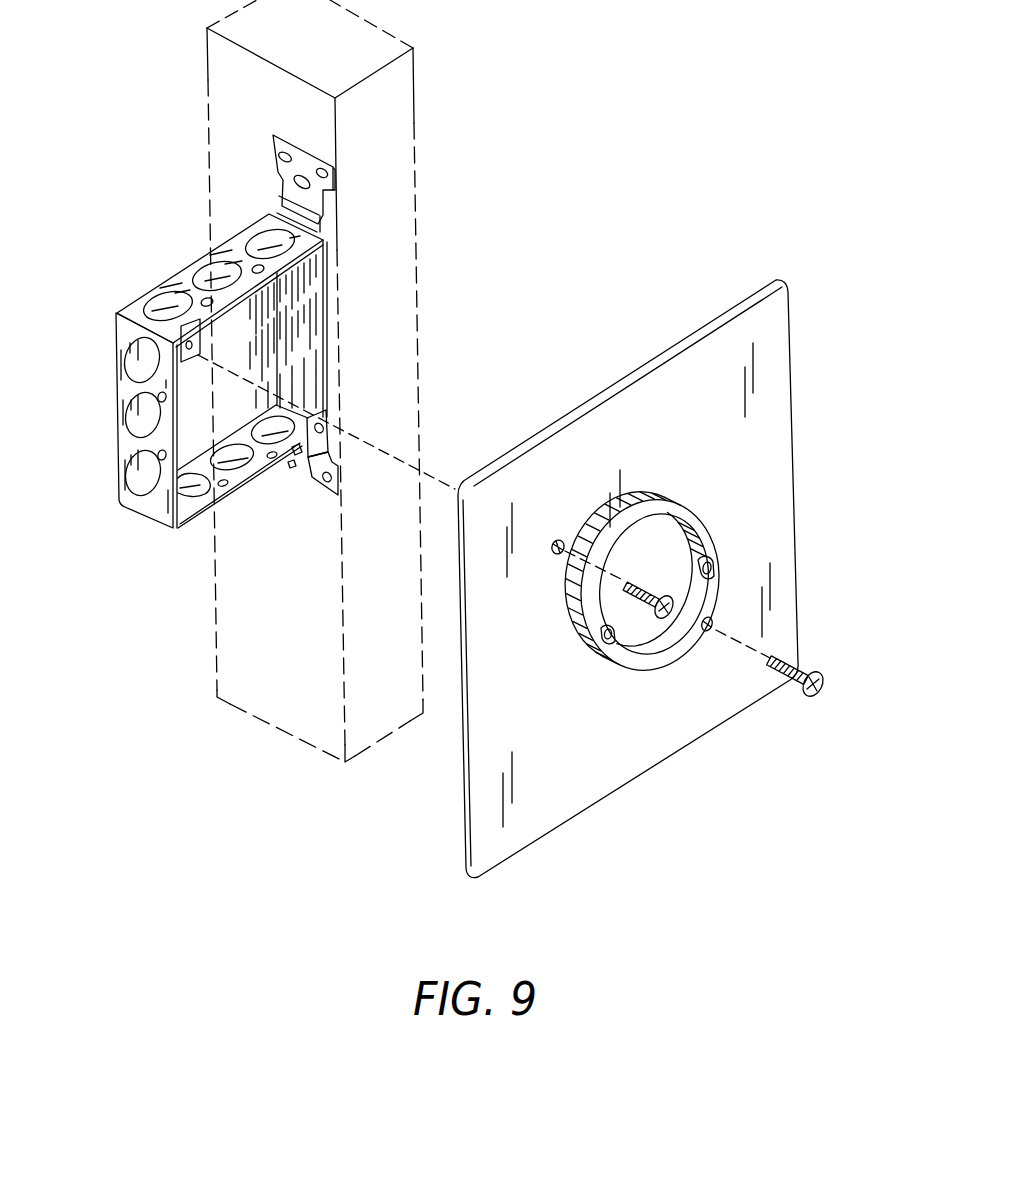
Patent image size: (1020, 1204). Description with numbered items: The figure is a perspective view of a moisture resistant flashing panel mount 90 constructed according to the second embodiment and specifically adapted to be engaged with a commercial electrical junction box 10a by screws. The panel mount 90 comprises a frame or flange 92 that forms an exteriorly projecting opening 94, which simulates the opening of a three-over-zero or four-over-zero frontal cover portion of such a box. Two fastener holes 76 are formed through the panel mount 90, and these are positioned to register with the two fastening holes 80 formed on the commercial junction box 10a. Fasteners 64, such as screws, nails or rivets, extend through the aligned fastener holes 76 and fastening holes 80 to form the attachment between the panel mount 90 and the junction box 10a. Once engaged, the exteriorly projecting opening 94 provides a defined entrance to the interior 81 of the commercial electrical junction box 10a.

The commercial junction box 10a is at (132, 281).
The fastening holes 80 is at (190, 338).
The interior 81 is at (189, 452).
The panel mount 90 is at (693, 299).
The frame or flange 92 is at (684, 500).
The exteriorly projecting opening 94 is at (668, 533).
The fastener holes 76 is at (559, 538).
The fasteners 64 is at (820, 694).